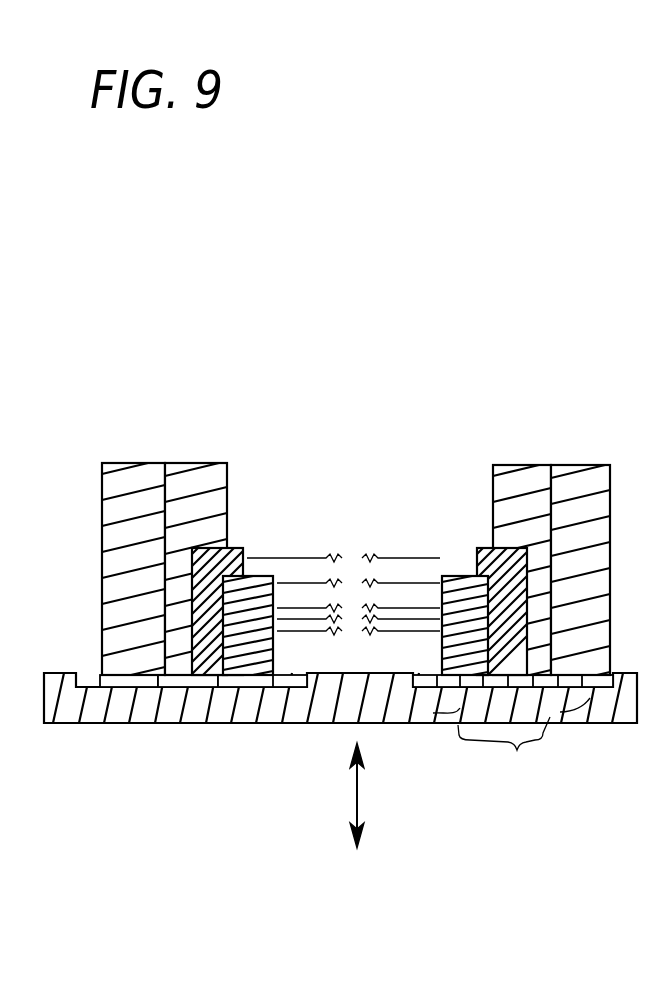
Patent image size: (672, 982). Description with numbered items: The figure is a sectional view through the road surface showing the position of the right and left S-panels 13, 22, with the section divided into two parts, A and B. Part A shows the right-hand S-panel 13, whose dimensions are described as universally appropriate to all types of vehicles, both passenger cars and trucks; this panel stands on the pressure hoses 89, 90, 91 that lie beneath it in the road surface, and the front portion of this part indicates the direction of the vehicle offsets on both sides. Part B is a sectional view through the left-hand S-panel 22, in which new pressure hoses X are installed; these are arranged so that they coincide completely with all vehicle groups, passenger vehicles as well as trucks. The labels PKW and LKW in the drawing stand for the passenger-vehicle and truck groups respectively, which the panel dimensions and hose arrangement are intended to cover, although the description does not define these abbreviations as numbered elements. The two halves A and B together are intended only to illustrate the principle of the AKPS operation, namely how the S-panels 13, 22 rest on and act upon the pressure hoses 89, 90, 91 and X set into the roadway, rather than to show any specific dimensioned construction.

The right-hand S-panel 13 is at (97, 690).
The left-hand S-panel 22 is at (600, 688).
The pressure hose 89 is at (128, 688).
The pressure hose 90 is at (170, 688).
The pressure hose 91 is at (233, 690).
The part A of the road surface section A is at (187, 553).
The part B of the road surface section B is at (516, 506).
The small block PKW is at (467, 600).
The large block LKW is at (572, 498).
The new pressure hoses X is at (504, 748).